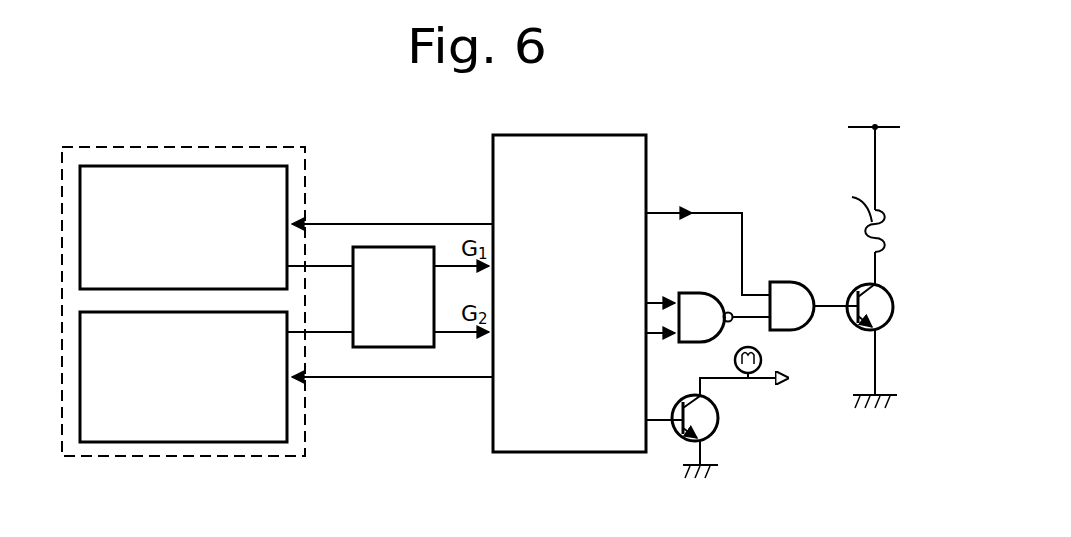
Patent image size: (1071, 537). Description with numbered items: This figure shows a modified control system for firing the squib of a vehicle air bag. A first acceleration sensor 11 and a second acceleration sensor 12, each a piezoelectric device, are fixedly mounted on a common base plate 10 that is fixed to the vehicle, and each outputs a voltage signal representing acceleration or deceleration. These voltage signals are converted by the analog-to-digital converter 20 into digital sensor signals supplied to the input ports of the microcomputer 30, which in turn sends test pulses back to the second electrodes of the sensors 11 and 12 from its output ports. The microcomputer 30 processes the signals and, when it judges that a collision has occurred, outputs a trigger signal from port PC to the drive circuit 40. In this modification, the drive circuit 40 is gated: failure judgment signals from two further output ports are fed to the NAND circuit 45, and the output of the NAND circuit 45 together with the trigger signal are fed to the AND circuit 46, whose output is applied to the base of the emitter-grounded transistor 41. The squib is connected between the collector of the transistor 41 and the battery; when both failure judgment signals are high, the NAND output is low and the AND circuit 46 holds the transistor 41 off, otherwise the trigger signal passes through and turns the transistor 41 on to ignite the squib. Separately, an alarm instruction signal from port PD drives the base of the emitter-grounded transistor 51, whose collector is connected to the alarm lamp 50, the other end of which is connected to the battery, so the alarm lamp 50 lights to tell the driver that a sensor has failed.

The base plate 10 is at (307, 412).
The first acceleration sensor 11 is at (217, 166).
The second acceleration sensor 12 is at (228, 442).
The analog-to-digital converter 20 is at (385, 247).
The microcomputer 30 is at (572, 135).
The drive circuit 40 is at (844, 237).
The transistor 41 is at (852, 291).
The NAND circuit 45 is at (695, 293).
The AND circuit 46 is at (790, 282).
The alarm lamp 50 is at (752, 383).
The transistor 51 is at (718, 418).